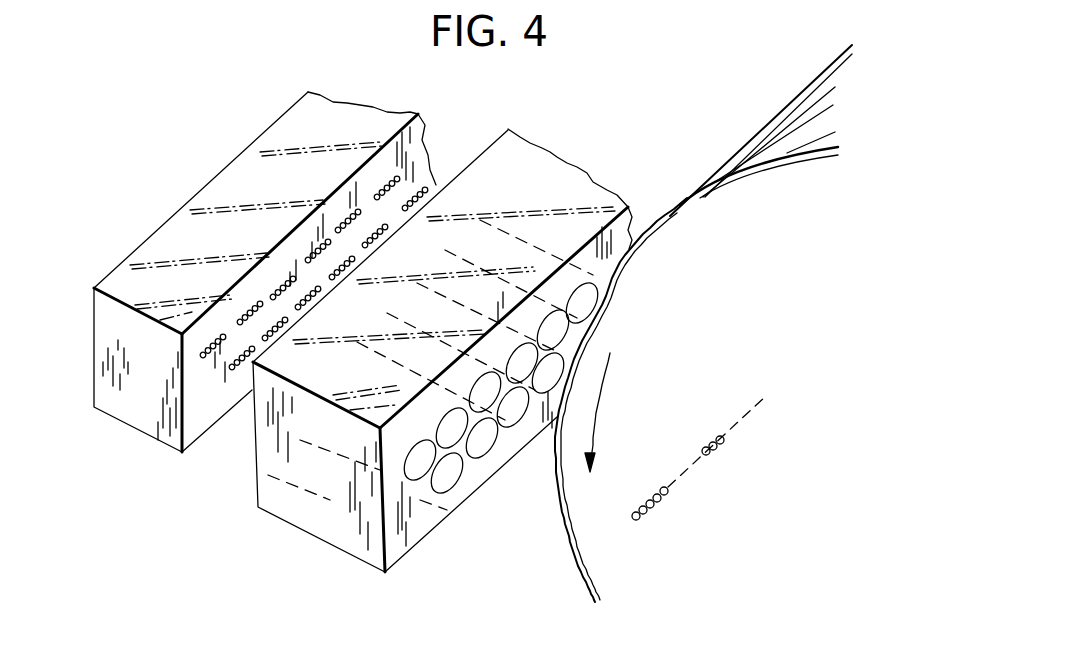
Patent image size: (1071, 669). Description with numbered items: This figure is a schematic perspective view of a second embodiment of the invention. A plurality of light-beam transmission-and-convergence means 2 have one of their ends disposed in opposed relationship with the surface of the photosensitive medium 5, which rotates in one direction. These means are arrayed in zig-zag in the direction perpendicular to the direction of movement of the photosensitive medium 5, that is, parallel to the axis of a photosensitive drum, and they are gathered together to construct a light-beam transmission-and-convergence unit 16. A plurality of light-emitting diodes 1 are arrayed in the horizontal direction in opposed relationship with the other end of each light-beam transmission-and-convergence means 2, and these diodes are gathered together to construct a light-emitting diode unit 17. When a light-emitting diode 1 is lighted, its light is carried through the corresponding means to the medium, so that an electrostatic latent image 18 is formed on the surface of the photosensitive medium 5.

The light-emitting diode 1 is at (210, 343).
The light-beam transmission-and-convergence means 2 is at (413, 467).
The photosensitive medium 5 is at (763, 140).
The light-beam transmission-and-convergence unit 16 is at (317, 528).
The light-emitting diode unit 17 is at (140, 420).
The electrostatic latent image 18 is at (637, 505).